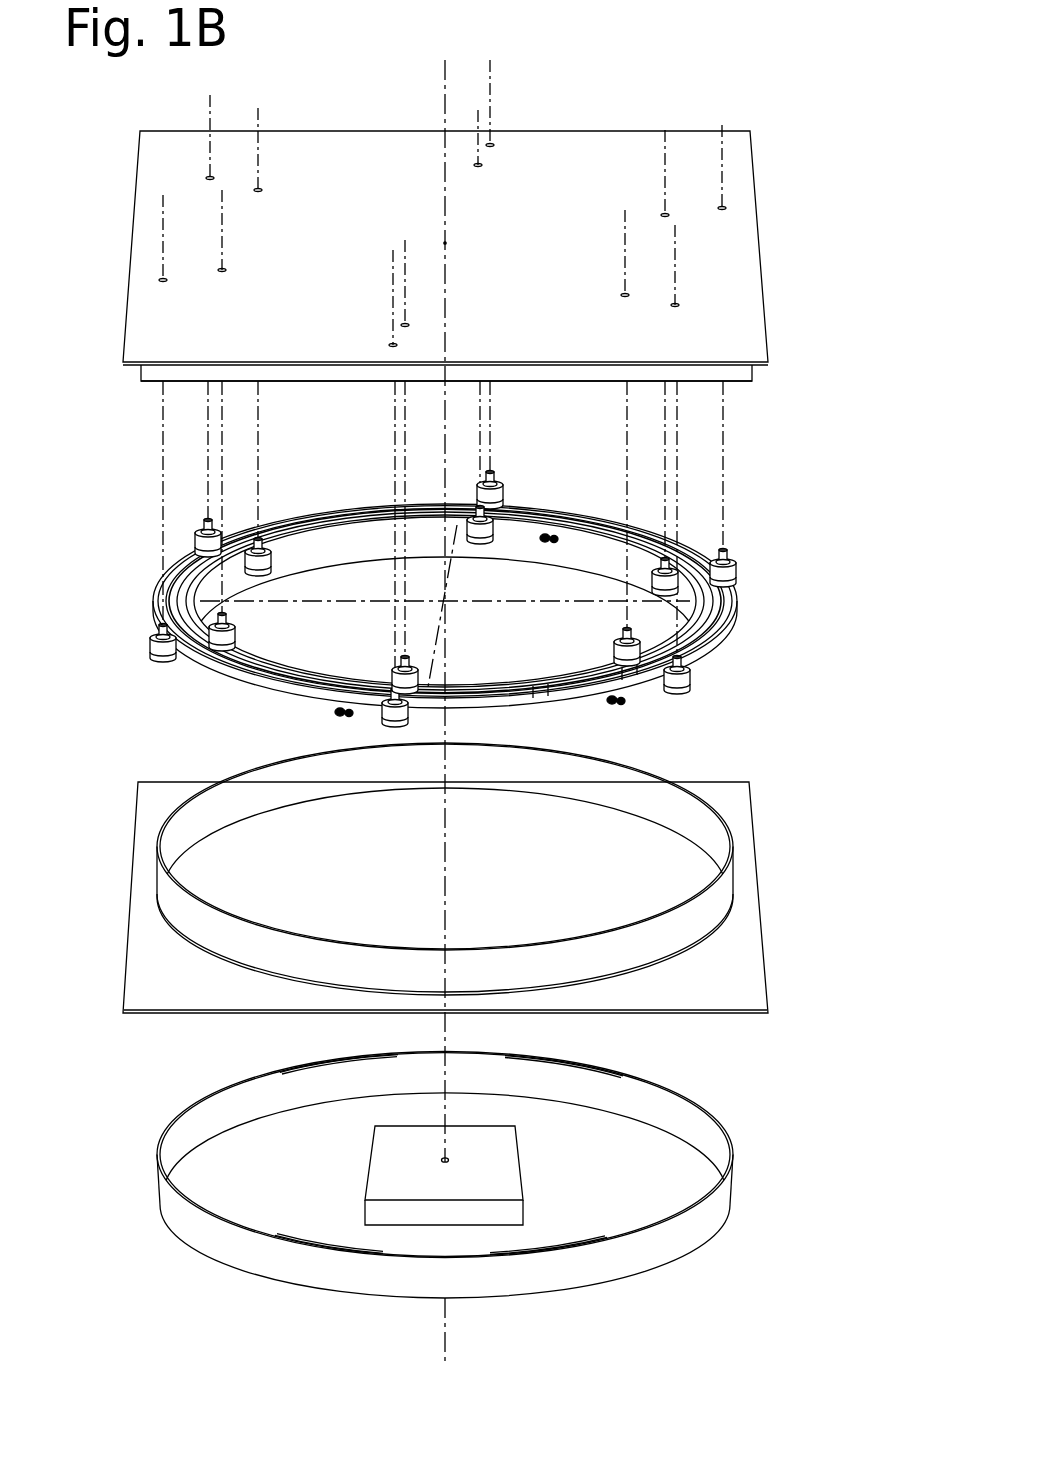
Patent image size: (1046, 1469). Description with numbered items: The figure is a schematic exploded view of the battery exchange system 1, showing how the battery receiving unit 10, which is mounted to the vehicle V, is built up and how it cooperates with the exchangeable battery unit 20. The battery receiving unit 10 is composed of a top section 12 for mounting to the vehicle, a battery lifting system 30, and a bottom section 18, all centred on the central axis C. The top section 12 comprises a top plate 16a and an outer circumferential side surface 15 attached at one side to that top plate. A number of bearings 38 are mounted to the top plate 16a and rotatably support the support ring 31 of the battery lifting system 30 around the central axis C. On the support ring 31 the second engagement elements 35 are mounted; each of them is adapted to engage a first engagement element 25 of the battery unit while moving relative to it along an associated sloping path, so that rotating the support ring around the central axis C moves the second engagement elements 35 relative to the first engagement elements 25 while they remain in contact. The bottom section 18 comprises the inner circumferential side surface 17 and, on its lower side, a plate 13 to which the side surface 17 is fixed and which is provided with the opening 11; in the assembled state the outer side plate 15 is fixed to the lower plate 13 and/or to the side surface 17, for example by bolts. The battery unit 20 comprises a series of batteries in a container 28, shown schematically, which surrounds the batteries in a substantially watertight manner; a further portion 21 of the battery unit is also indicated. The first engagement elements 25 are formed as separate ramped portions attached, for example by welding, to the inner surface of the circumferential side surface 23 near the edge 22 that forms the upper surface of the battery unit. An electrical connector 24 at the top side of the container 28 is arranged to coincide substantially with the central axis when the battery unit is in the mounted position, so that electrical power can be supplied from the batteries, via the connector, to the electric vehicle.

The battery exchange system 1 is at (660, 112).
The vertical axis V is at (448, 118).
The central axis C is at (445, 243).
The battery receiving unit 10 is at (870, 63).
The opening 11 is at (650, 858).
The top section 12 is at (757, 157).
The plate 13 is at (752, 940).
The outer circumferential side surface 15 is at (738, 365).
The top plate 16a is at (735, 240).
The inner circumferential side surface 17 is at (640, 797).
The bottom section 18 is at (762, 845).
The battery unit 20 is at (745, 1188).
The tray bottom 21 is at (240, 1165).
The edge 22 is at (693, 1102).
The circumferential side surface 23 is at (177, 1203).
The electrical connector 24 is at (448, 1160).
The first engagement element 25 is at (320, 1067).
The container 28 is at (400, 1140).
The battery lifting system 30 is at (738, 618).
The support ring 31 is at (683, 552).
The second engagement element 35 is at (522, 532).
The bearings 38 is at (698, 680).